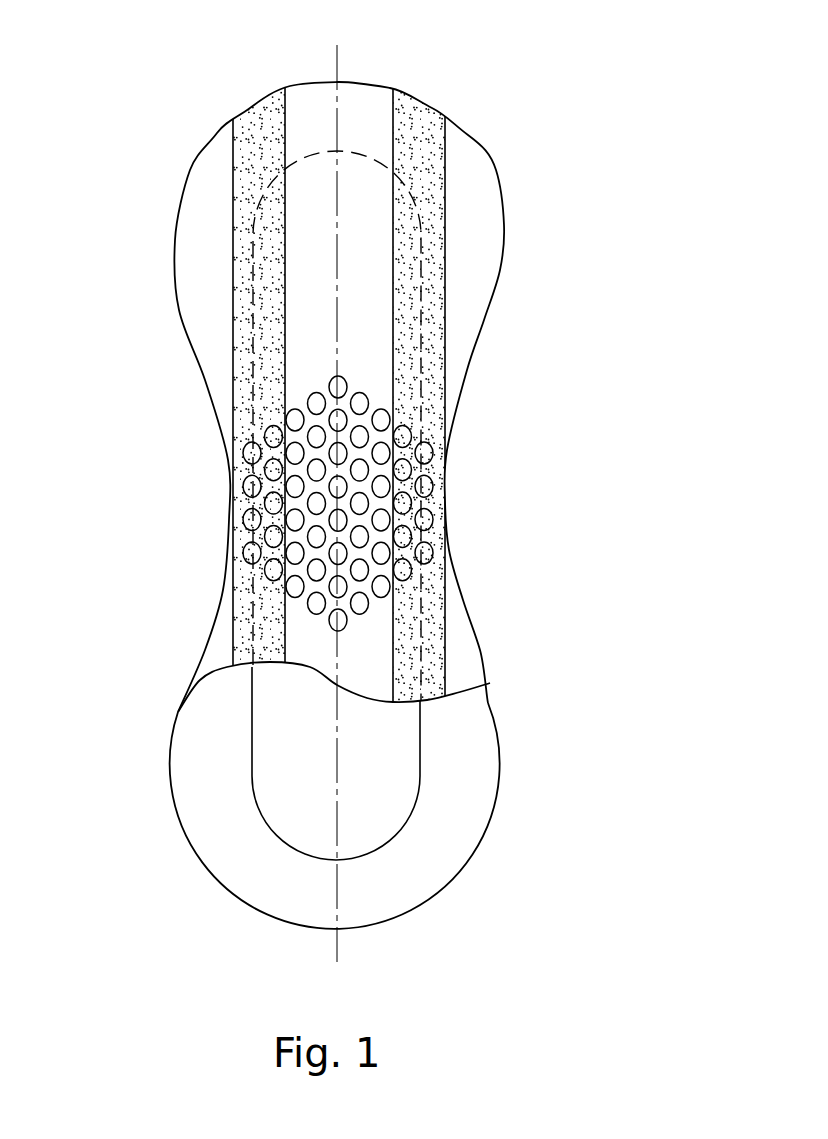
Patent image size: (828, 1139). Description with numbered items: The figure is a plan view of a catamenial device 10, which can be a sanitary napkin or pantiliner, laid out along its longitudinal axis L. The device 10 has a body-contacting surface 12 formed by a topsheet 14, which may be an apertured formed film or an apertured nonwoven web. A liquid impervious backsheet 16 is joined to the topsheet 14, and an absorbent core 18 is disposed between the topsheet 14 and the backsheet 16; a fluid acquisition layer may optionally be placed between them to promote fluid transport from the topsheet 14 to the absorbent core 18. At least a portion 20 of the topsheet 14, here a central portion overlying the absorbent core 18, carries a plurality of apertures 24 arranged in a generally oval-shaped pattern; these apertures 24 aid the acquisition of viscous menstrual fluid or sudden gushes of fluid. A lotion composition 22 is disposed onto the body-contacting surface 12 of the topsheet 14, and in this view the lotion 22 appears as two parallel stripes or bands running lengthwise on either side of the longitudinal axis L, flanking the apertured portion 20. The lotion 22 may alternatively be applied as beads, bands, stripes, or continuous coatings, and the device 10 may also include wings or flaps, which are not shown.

The catamenial device 10 is at (548, 172).
The longitudinal axis L is at (340, 73).
The body-contacting surface 12 is at (452, 607).
The topsheet 14 is at (447, 670).
The liquid impervious backsheet 16 is at (455, 837).
The absorbent core 18 is at (397, 780).
The portion of the topsheet 20 is at (385, 472).
The lotion composition 22 is at (417, 130).
The apertures 24 is at (337, 487).